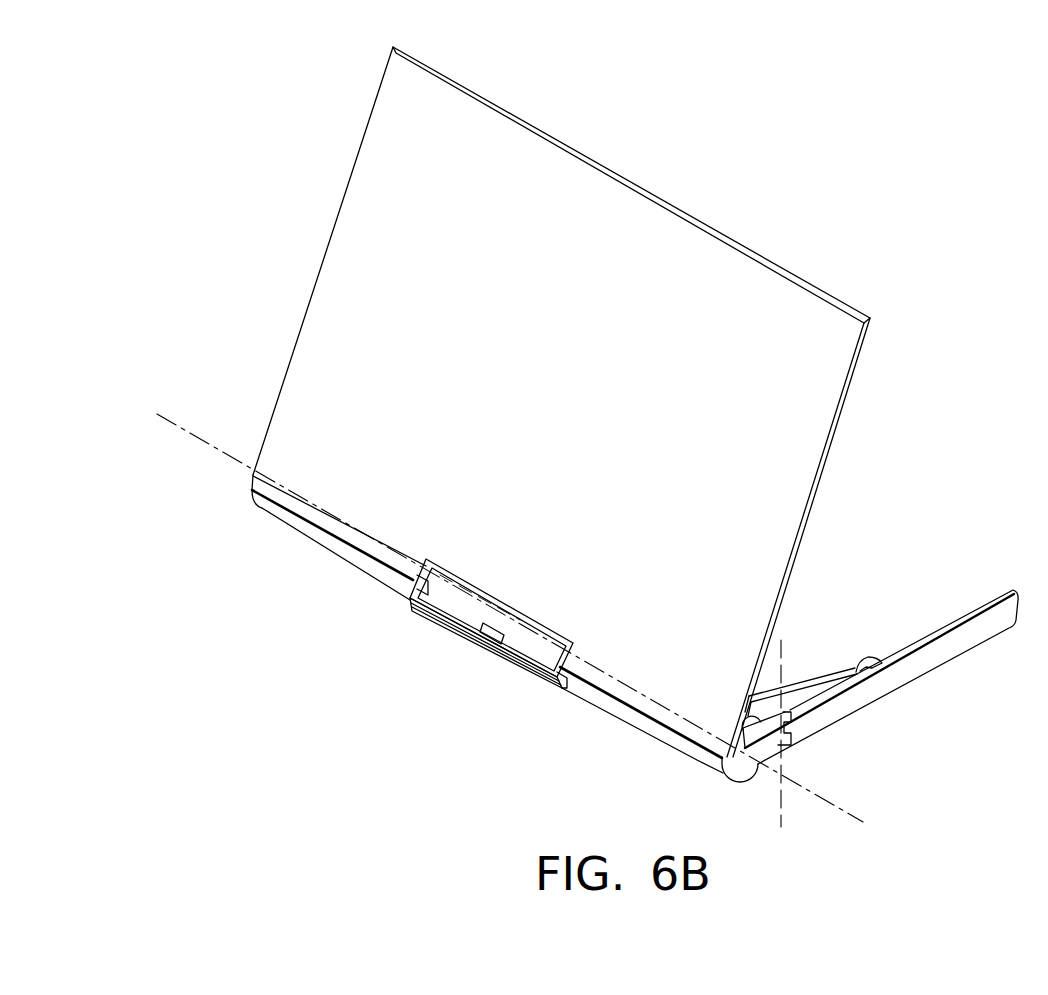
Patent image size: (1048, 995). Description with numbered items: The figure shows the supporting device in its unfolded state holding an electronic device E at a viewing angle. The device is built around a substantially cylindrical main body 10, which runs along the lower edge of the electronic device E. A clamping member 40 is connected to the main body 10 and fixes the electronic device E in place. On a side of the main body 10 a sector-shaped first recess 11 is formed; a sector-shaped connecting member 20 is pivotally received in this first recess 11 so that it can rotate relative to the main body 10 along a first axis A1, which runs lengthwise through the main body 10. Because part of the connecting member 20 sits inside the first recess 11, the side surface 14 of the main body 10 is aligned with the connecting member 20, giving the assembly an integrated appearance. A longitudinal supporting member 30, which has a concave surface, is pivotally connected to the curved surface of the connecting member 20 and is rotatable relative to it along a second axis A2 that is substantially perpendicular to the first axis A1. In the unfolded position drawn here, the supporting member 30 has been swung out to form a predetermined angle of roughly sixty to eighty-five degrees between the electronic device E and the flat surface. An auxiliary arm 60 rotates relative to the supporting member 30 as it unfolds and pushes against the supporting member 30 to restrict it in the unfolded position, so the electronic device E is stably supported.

The electronic device E is at (822, 317).
The main body 10 is at (682, 745).
The first recess 11 is at (758, 720).
The side surface 14 is at (737, 773).
The connecting member 20 is at (785, 745).
The supporting member 30 is at (920, 662).
The clamping member 40 is at (546, 677).
The auxiliary arm 60 is at (837, 672).
The first axis A1 is at (848, 815).
The second axis A2 is at (783, 812).